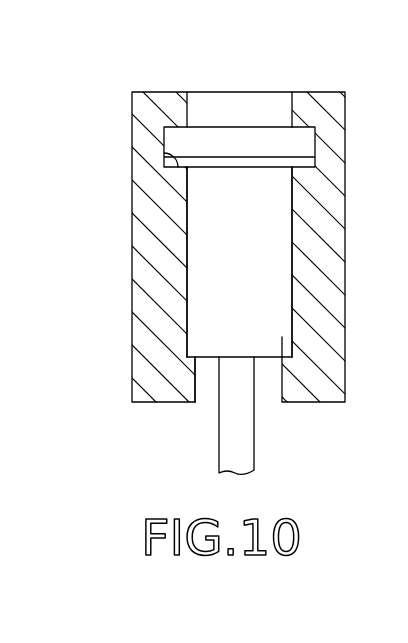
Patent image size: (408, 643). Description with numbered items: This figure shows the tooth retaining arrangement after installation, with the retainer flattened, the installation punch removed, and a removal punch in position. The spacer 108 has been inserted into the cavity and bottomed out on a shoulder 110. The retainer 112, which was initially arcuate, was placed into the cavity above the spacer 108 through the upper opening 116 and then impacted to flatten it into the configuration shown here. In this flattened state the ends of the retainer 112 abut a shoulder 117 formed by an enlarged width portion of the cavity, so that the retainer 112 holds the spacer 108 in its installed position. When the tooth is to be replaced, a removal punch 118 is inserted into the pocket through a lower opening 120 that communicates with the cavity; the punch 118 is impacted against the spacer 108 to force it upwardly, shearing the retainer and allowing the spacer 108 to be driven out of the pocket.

The spacer 108 is at (262, 232).
The shoulder 110 is at (282, 337).
The retainer 112 is at (220, 158).
The upper opening 116 is at (283, 102).
The shoulder 117 is at (164, 151).
The removal punch 118 is at (242, 450).
The lower opening 120 is at (206, 392).